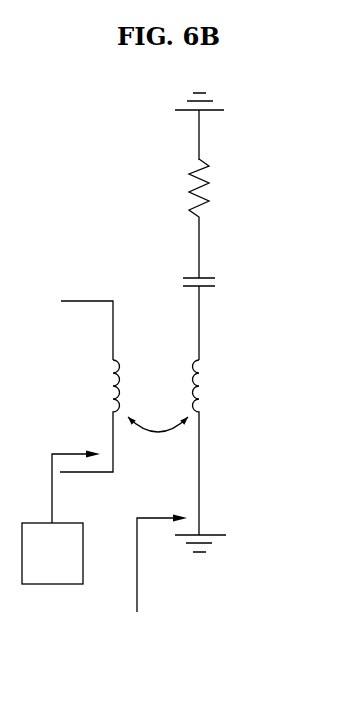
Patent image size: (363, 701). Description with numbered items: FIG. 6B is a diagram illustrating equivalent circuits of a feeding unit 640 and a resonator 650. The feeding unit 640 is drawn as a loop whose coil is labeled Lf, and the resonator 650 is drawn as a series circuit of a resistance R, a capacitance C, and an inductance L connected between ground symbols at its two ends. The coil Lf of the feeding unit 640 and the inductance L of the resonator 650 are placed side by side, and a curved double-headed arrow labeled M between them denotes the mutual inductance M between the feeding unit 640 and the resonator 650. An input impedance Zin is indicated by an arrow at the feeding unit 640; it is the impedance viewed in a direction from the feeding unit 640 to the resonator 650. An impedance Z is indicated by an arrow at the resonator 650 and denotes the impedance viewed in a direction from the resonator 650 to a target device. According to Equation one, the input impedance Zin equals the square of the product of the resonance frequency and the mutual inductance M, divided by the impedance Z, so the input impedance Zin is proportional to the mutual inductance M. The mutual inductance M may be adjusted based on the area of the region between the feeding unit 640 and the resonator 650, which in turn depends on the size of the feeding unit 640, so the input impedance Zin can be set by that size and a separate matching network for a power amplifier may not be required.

The feeding unit 640 is at (87, 300).
The resonator 650 is at (205, 113).
The resistor R is at (212, 218).
The capacitor C is at (212, 315).
The inductor L is at (208, 447).
The feed inductor Lf is at (90, 416).
The mutual inductance M is at (158, 440).
The input impedance Zin is at (61, 518).
The impedance Z is at (157, 581).